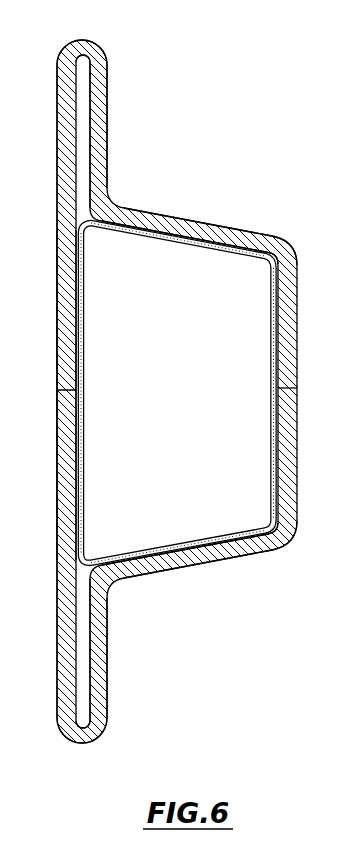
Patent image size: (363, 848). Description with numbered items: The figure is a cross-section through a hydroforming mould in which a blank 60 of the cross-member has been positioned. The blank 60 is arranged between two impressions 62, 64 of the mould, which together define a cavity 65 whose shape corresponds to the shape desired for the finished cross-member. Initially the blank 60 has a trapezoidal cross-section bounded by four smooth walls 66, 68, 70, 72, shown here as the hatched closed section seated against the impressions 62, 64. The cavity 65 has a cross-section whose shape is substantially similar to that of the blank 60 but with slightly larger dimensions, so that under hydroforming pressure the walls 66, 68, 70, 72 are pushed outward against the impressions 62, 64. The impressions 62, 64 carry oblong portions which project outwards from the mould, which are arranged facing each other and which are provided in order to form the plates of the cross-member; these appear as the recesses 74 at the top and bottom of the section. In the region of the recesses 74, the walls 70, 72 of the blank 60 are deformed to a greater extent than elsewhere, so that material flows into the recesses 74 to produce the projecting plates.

The blank 60 is at (173, 222).
The impression 62 is at (254, 240).
The impression 64 is at (288, 531).
The cavity 65 is at (180, 395).
The wall 66 is at (84, 315).
The wall 68 is at (270, 340).
The wall 70 is at (190, 543).
The wall 72 is at (186, 244).
The recess 74 is at (98, 82).